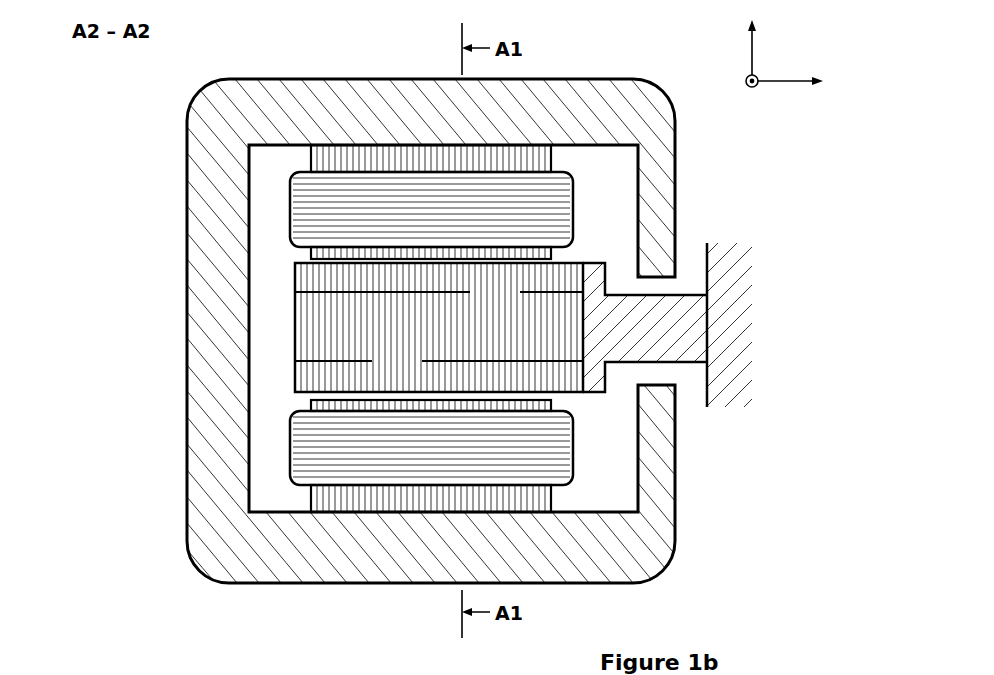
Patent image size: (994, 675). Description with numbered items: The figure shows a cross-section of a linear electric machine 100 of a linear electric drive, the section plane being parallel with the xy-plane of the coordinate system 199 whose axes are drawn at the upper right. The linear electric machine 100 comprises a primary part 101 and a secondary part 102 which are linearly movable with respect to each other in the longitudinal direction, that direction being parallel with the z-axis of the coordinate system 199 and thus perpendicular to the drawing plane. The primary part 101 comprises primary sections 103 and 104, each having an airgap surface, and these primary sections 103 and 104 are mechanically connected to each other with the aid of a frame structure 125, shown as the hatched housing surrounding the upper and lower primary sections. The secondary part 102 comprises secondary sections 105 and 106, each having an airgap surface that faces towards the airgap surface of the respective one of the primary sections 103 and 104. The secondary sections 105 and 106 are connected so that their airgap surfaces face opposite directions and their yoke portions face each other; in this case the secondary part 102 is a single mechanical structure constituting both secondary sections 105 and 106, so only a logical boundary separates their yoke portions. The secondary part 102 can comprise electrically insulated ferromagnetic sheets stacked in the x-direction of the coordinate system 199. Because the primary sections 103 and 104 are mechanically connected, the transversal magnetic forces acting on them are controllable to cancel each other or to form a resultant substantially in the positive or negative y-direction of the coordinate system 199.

The linear electric machine 100 is at (143, 295).
The primary part 101 is at (353, 78).
The secondary part 102 is at (595, 338).
The primary section 103 is at (413, 179).
The primary section 104 is at (403, 493).
The secondary section 105 is at (513, 297).
The secondary section 106 is at (415, 365).
The frame structure 125 is at (238, 354).
The coordinate system 199 is at (803, 67).